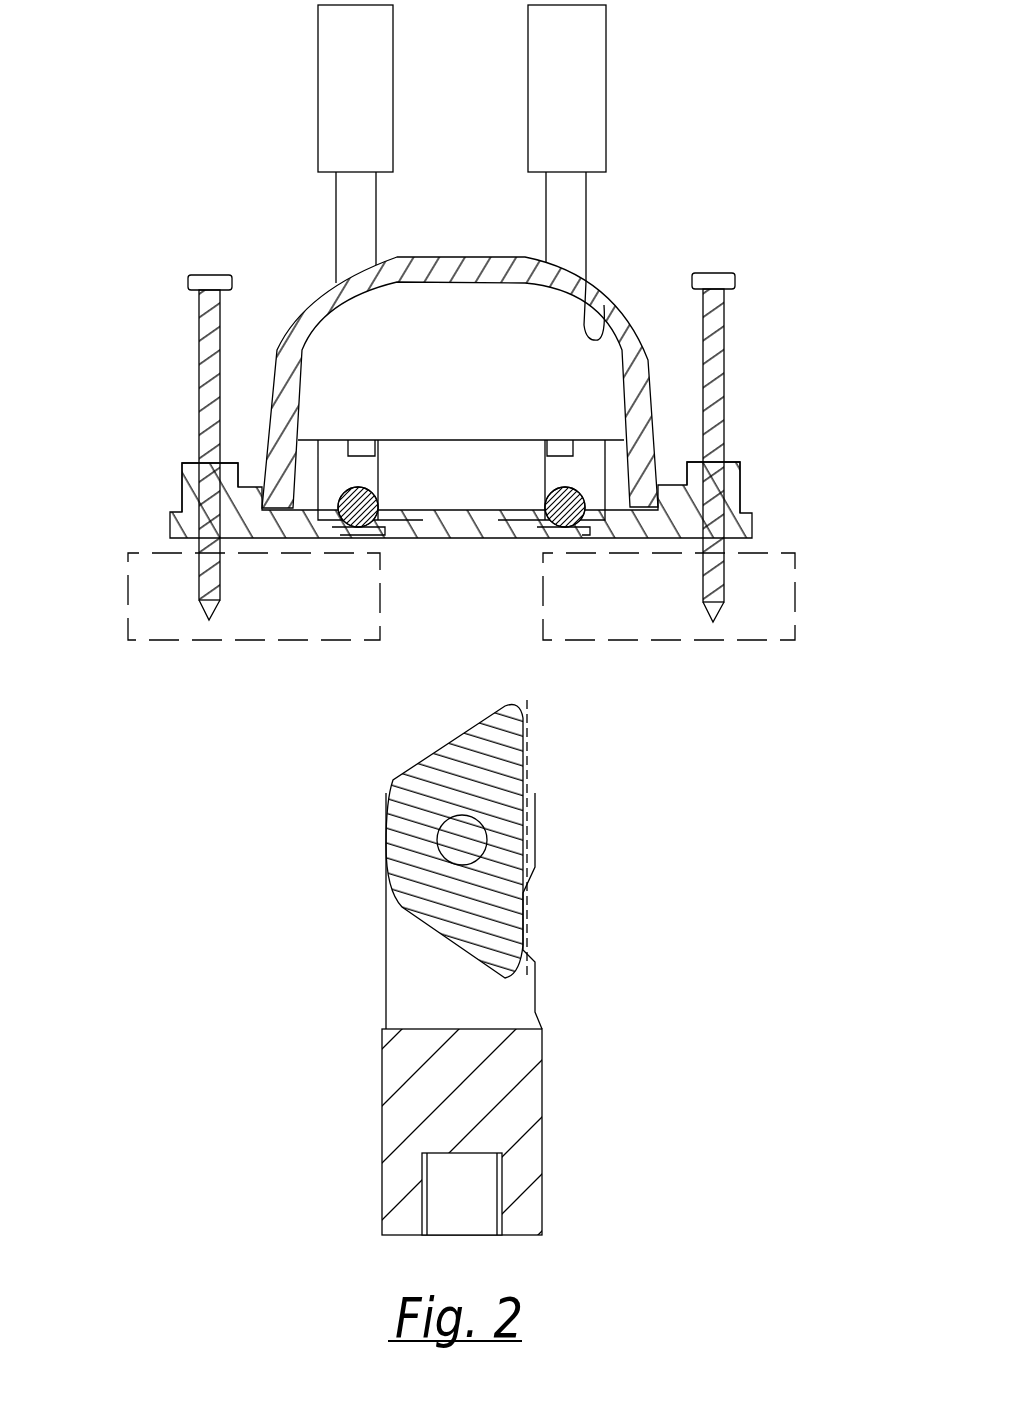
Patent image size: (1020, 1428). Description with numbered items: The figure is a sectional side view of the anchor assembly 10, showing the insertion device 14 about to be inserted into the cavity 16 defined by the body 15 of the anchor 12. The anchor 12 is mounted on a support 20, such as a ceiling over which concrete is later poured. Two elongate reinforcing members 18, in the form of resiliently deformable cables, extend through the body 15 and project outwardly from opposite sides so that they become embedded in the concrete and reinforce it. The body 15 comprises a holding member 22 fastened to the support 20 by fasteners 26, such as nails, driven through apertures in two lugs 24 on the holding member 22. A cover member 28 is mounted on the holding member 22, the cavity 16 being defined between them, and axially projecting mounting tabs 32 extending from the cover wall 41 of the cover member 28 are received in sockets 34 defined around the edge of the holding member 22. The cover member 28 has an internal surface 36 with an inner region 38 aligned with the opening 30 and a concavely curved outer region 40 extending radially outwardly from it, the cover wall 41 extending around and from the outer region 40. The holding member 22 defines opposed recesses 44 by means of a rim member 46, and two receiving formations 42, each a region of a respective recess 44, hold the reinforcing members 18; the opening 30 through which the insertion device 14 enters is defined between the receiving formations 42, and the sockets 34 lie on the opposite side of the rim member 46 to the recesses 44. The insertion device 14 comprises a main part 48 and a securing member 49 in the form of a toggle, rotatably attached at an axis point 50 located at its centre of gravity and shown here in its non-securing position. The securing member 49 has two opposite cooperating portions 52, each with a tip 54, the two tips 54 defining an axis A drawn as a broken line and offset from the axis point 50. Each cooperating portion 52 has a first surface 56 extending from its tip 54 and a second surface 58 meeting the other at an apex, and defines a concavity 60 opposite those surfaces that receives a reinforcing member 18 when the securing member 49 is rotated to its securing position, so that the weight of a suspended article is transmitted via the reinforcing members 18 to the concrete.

The anchor assembly 10 is at (174, 114).
The anchor 12 is at (672, 132).
The insertion device 14 is at (493, 935).
The body 15 is at (654, 337).
The cavity 16 is at (597, 310).
The reinforcing members 18 is at (355, 208).
The support 20 is at (660, 645).
The holding member 22 is at (622, 451).
The lugs 24 is at (188, 480).
The fastener 26 is at (205, 311).
The cover member 28 is at (452, 253).
The opening 30 is at (520, 528).
The mounting tabs 32 is at (280, 505).
The sockets 34 is at (277, 510).
The internal surface 36 is at (324, 343).
The inner region 38 is at (462, 286).
The outer region 40 is at (380, 286).
The cover wall 41 is at (642, 384).
The receiving formations 42 is at (357, 530).
The recesses 44 is at (545, 470).
The rim member 46 is at (608, 492).
The main part 48 is at (405, 992).
The securing member 49 is at (387, 854).
The axis point 50 is at (468, 850).
The cooperating portions 52 is at (428, 752).
The tips 54 is at (510, 718).
The first surfaces 56 is at (463, 733).
The second surfaces 58 is at (385, 791).
The concavities 60 is at (532, 767).
The axis A is at (533, 805).